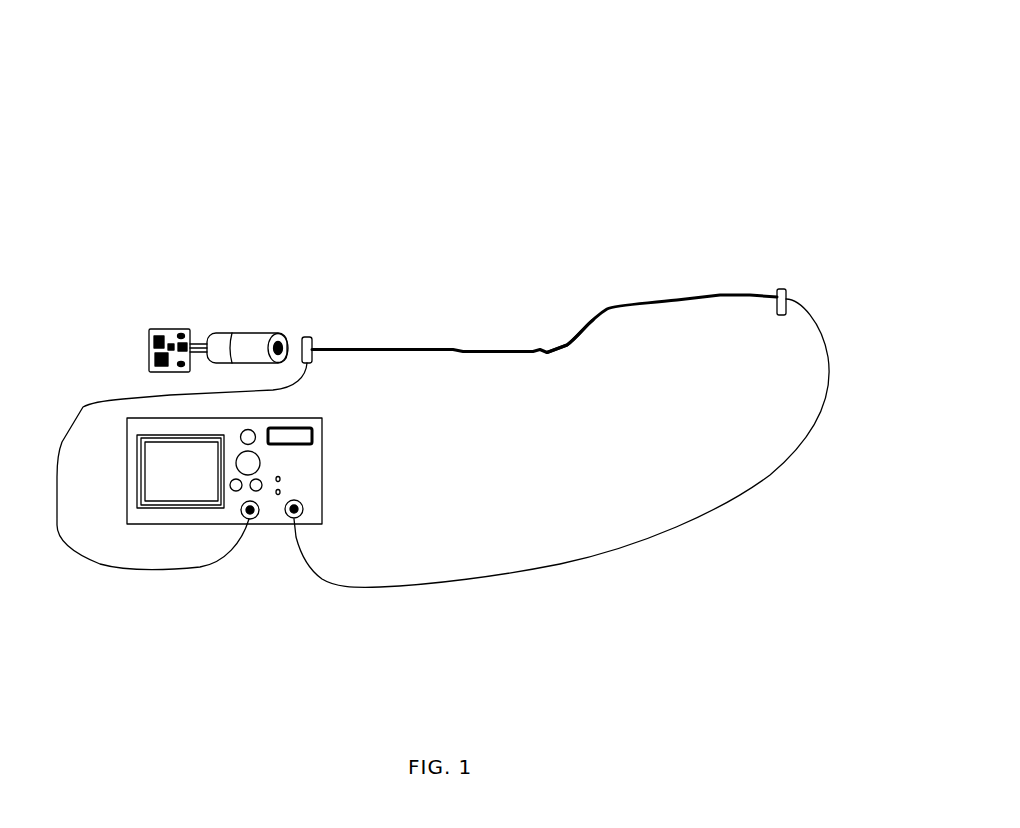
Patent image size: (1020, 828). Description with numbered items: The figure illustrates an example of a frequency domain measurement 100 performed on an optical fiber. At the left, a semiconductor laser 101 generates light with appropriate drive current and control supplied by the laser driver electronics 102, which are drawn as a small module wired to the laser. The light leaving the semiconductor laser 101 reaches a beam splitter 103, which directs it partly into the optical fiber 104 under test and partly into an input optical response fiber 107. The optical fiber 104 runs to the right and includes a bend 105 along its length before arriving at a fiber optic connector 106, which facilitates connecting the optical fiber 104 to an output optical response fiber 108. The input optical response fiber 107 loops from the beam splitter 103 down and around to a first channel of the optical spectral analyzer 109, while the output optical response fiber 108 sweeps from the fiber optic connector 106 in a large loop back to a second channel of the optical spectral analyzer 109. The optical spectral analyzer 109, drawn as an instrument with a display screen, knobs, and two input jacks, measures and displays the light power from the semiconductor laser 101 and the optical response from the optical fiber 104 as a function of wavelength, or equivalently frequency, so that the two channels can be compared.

The frequency domain measurement 100 is at (589, 59).
The semiconductor laser 101 is at (222, 336).
The laser driver electronics 102 is at (149, 343).
The beam splitter 103 is at (303, 340).
The optical fiber 104 is at (449, 324).
The bend 105 is at (568, 348).
The fiber optic connector 106 is at (777, 292).
The input optical response fiber 107 is at (91, 580).
The output optical response fiber 108 is at (765, 516).
The optical spectral analyzer 109 is at (322, 474).